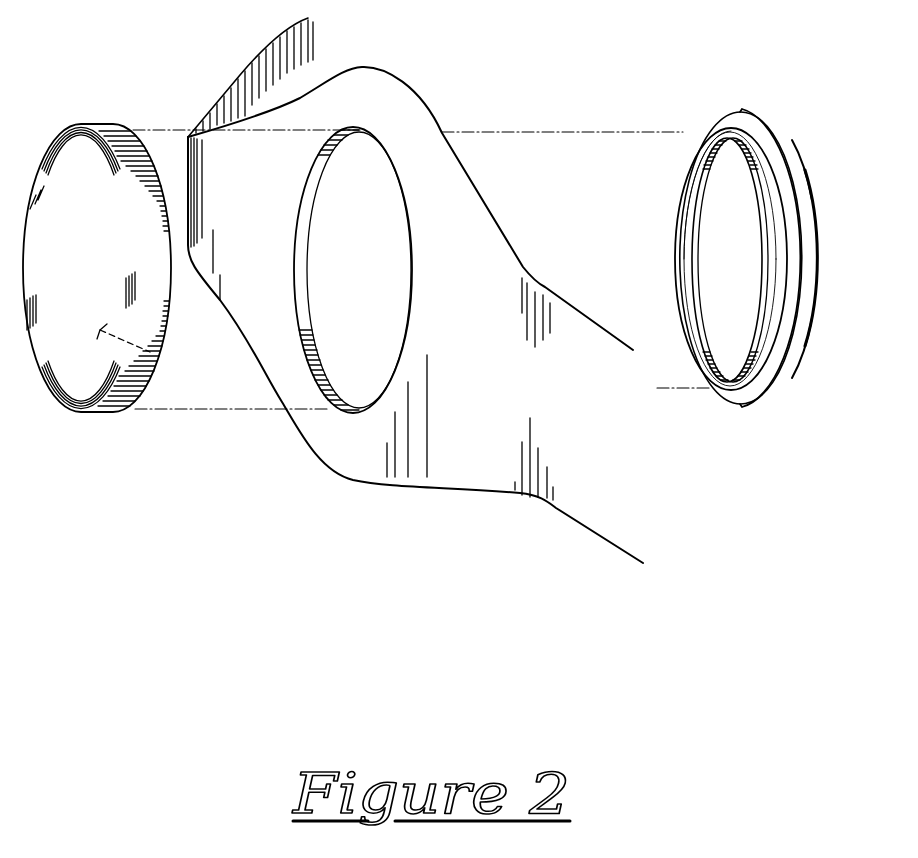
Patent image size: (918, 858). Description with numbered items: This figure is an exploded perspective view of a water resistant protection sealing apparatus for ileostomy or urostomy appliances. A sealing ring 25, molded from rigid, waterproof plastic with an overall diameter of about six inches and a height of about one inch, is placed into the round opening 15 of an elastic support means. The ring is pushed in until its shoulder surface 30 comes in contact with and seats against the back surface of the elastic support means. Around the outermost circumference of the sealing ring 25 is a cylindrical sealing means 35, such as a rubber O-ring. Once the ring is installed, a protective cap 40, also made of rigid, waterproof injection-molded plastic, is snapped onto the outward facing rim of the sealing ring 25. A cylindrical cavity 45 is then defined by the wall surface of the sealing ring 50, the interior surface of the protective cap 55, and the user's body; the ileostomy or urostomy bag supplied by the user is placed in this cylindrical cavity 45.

The round opening 15 is at (465, 432).
The sealing ring 25 is at (716, 222).
The shoulder surface 30 is at (768, 142).
The cylindrical sealing means 35 is at (803, 165).
The protective cap 40 is at (82, 130).
The cylindrical cavity 45 is at (728, 245).
The wall surface of the sealing ring 50 is at (693, 295).
The interior surface of the protective cap 55 is at (150, 352).